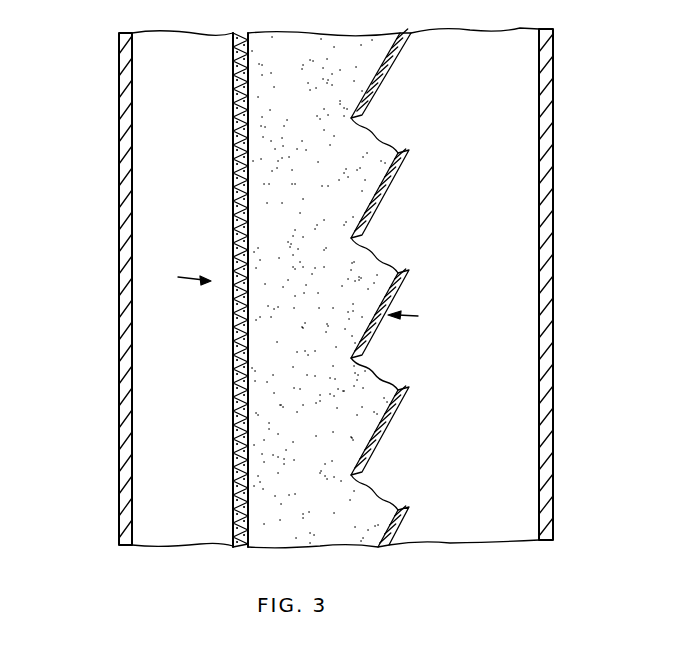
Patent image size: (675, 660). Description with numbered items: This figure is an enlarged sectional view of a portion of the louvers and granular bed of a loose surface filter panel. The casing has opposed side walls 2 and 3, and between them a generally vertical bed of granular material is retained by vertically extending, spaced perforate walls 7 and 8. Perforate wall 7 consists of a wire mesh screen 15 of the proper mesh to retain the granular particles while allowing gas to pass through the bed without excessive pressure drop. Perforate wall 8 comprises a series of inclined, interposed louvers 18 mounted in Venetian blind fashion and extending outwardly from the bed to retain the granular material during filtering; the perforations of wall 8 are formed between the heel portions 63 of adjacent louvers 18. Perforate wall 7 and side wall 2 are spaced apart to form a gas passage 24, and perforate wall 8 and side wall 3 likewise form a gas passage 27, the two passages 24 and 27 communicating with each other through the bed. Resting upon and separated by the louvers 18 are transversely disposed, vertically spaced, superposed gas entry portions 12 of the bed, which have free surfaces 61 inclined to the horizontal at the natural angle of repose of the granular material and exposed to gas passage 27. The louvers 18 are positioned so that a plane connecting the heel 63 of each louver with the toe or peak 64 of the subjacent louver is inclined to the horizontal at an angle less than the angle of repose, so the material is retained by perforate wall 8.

The side wall 2 is at (118, 353).
The side wall 3 is at (553, 272).
The perforate wall 7 is at (187, 278).
The perforate wall 8 is at (411, 315).
The gas entry portions 12 is at (345, 178).
The wire mesh screen 15 is at (232, 185).
The louvers 18 is at (393, 288).
The gas passage 24 is at (157, 517).
The gas passage 27 is at (493, 442).
The free surfaces 61 is at (388, 250).
The heel portions 63 is at (348, 356).
The toes 64 is at (400, 387).